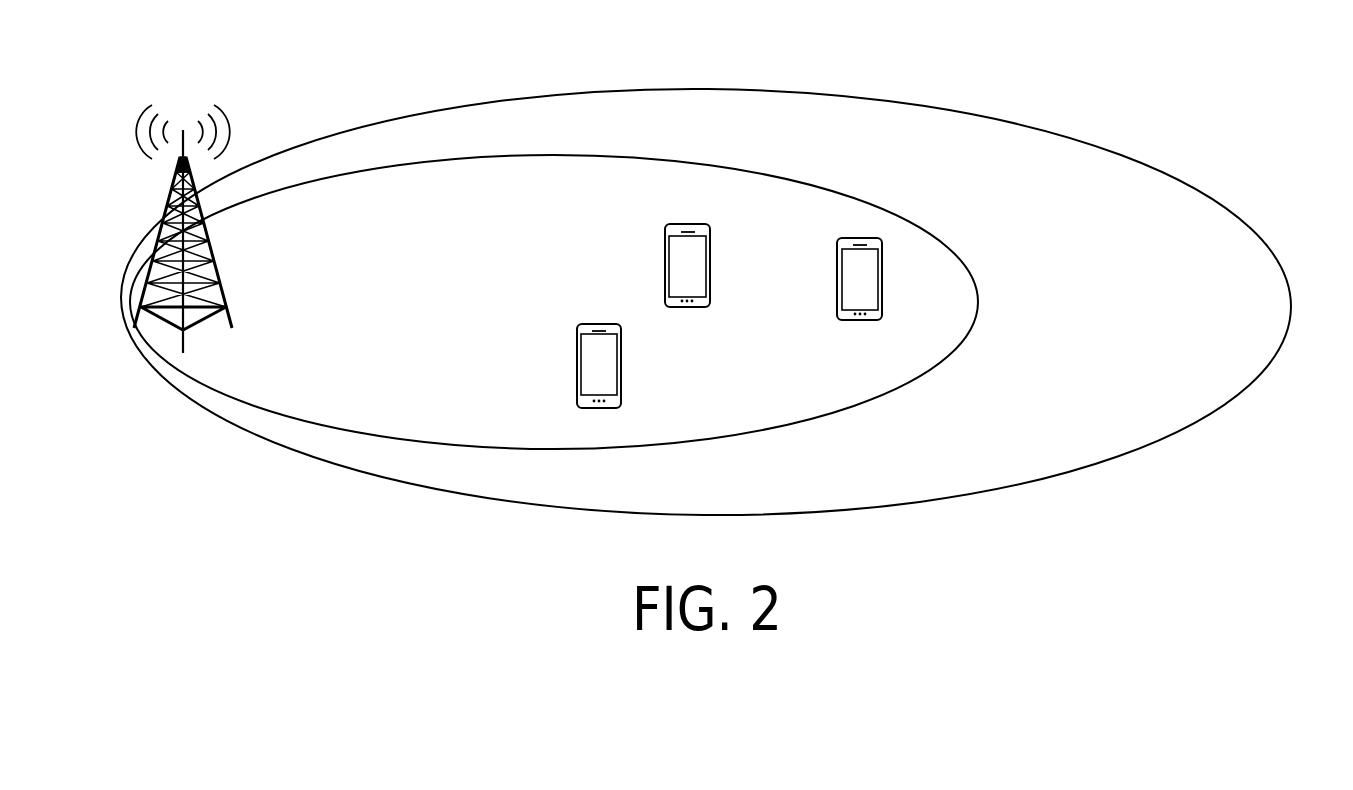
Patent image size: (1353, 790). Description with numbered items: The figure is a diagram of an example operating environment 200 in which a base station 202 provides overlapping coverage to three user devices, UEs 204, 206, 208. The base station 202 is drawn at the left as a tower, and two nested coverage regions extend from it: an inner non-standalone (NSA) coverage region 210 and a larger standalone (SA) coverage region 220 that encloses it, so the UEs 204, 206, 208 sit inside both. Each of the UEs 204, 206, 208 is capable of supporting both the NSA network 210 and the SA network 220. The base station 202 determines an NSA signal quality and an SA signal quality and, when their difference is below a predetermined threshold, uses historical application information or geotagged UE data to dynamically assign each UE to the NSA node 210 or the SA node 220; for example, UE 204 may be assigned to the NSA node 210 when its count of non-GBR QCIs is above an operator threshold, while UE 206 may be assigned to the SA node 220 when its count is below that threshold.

The wireless communication system 200 is at (398, 631).
The base station 202 is at (178, 90).
The UE 204 is at (590, 323).
The UE 206 is at (692, 223).
The UE 208 is at (858, 237).
The NSA 5G 210 is at (604, 153).
The SA 5G 220 is at (765, 88).